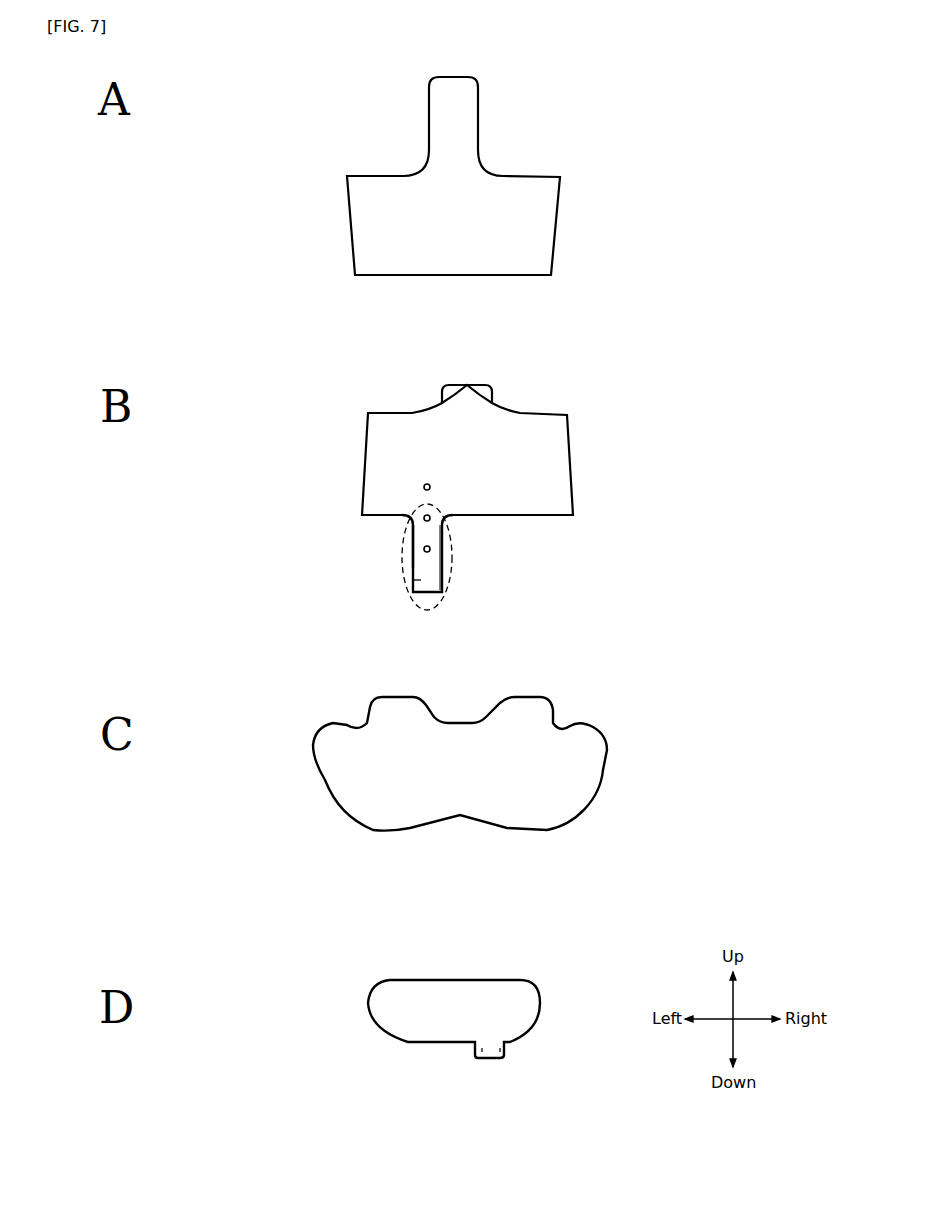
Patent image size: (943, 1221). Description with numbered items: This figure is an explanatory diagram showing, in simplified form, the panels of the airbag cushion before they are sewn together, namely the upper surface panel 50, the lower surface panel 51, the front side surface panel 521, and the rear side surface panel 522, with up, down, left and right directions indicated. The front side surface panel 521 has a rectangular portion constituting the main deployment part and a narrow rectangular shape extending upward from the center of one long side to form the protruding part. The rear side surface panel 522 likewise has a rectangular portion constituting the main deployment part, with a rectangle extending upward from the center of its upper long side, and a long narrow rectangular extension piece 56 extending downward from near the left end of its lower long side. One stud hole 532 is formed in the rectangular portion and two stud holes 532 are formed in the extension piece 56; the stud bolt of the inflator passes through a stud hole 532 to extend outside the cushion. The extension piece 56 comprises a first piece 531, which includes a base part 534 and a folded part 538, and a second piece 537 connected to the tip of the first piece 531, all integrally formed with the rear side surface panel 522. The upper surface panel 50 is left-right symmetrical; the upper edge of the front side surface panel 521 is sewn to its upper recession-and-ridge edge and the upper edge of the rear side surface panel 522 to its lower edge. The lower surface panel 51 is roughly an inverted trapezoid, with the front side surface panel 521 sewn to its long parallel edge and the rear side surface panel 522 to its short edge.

The upper surface panel 50 is at (608, 768).
The lower surface panel 51 is at (537, 987).
The extension piece 56 is at (413, 593).
The front side surface panel 521 is at (510, 175).
The rear side surface panel 522 is at (571, 447).
The first piece 531 is at (303, 523).
The stud hole 532 is at (430, 489).
The base part 534 is at (412, 523).
The second piece 537 is at (413, 580).
The folded part 538 is at (412, 550).